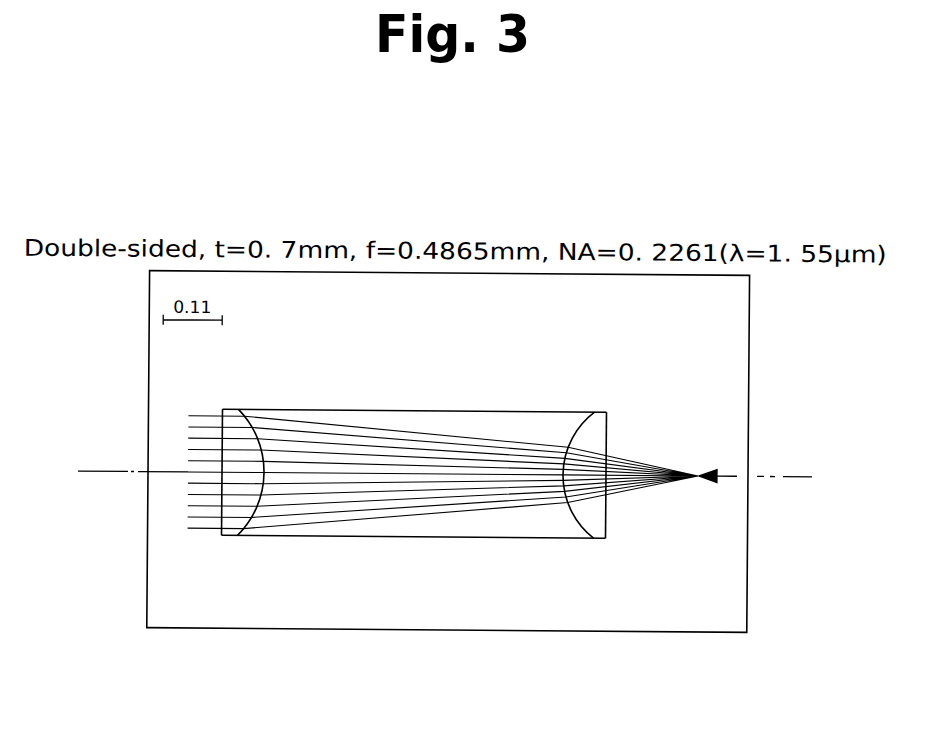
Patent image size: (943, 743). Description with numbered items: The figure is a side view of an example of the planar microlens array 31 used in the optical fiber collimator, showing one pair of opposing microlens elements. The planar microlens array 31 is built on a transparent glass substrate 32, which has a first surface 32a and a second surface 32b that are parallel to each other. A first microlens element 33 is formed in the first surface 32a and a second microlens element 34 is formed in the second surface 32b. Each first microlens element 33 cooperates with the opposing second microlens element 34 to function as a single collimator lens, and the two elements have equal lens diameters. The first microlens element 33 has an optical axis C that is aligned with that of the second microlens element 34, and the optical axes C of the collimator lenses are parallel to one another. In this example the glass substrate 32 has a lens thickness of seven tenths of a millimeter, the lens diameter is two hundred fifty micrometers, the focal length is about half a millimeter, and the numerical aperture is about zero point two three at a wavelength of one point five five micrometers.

The planar microlens array 31 is at (457, 398).
The glass substrate 32 is at (419, 444).
The first surface 32a is at (607, 436).
The second surface 32b is at (222, 432).
The first microlens element 33 is at (583, 431).
The second microlens element 34 is at (247, 418).
The optical axis C is at (784, 474).